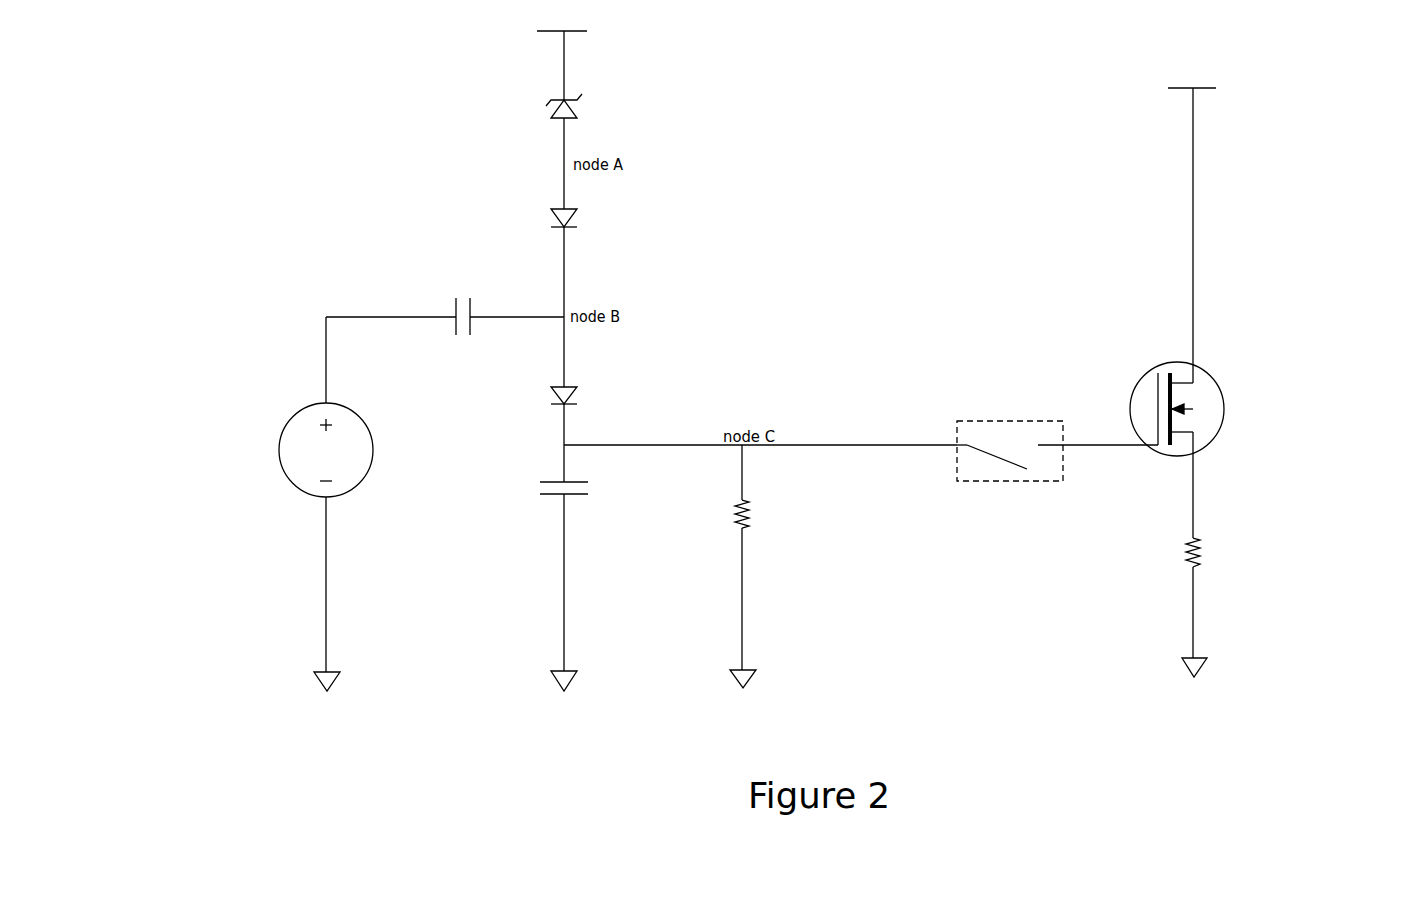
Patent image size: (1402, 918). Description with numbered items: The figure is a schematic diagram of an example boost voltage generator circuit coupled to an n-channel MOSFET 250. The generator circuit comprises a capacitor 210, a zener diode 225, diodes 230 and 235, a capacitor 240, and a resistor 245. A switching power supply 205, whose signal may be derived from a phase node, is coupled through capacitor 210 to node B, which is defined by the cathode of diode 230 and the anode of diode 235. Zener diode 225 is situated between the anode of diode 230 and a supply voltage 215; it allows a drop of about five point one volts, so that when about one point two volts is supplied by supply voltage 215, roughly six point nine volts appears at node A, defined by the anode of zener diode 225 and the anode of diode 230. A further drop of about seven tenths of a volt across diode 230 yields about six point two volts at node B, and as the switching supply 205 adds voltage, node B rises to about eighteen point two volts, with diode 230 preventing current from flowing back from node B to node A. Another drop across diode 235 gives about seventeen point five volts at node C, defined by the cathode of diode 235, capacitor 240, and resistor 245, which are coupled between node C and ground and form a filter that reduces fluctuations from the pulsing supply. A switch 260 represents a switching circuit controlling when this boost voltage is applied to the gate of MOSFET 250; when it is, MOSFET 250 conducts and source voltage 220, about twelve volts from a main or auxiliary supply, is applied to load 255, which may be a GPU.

The switching power supply 205 is at (281, 517).
The capacitor 210 is at (414, 304).
The supply voltage 215 is at (577, 15).
The source voltage 220 is at (1196, 71).
The zener diode 225 is at (642, 108).
The diode 230 is at (613, 220).
The diode 235 is at (612, 398).
The capacitor 240 is at (509, 476).
The resistor 245 is at (799, 566).
The n-channel MOSFET 250 is at (1242, 313).
The load 255 is at (1237, 607).
The switch 260 is at (1057, 436).